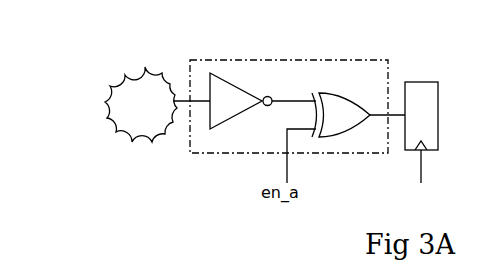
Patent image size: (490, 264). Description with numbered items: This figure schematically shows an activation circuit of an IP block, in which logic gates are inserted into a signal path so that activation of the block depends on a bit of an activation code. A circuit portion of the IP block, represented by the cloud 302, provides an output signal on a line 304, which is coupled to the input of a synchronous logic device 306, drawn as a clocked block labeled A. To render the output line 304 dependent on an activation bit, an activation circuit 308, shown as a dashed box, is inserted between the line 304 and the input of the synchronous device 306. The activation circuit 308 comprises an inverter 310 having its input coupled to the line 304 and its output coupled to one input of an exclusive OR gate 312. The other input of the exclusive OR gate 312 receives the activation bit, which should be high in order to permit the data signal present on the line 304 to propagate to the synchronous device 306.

The cloud 302 is at (125, 133).
The line 304 is at (185, 103).
The synchronous logic device 306 is at (425, 82).
The activation circuit 308 is at (283, 61).
The inverter 310 is at (227, 118).
The exclusive OR gate 312 is at (364, 86).